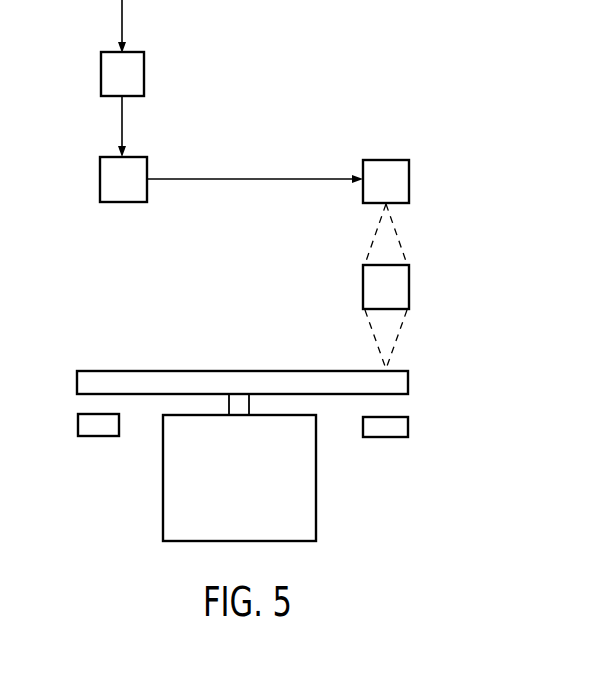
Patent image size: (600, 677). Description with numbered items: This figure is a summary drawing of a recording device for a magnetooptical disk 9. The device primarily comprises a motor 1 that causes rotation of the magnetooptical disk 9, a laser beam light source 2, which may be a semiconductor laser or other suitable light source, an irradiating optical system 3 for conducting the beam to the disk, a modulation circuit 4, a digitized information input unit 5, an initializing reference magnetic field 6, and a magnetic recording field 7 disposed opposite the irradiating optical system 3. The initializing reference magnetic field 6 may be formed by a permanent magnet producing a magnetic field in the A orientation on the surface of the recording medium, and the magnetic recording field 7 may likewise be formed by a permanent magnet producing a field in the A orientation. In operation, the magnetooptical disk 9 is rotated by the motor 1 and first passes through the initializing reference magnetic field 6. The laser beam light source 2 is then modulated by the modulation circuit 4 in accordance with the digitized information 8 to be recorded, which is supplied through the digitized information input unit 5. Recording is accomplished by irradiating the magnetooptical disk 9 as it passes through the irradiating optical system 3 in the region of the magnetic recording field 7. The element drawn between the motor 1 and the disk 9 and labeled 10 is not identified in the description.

The motor 1 is at (316, 503).
The laser beam light source 2 is at (410, 184).
The irradiating optical system 3 is at (409, 285).
The modulation circuit 4 is at (138, 158).
The digitized information input unit 5 is at (146, 76).
The initializing reference magnetic field 6 is at (78, 420).
The magnetic recording field 7 is at (408, 428).
The digitized information 8 is at (123, 4).
The magnetooptical disk 9 is at (408, 383).
The support pin 10 is at (229, 410).